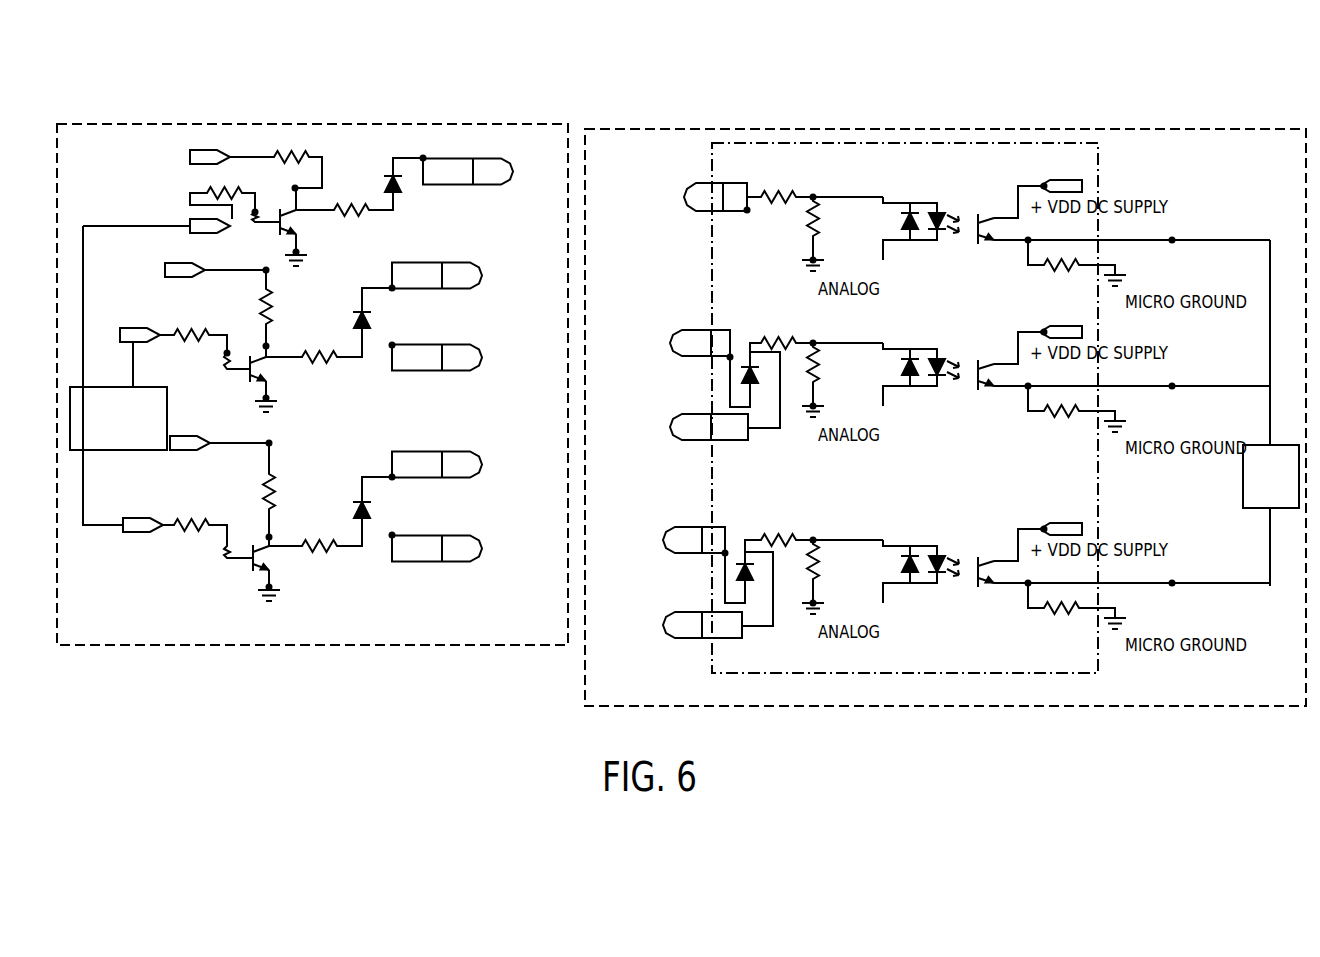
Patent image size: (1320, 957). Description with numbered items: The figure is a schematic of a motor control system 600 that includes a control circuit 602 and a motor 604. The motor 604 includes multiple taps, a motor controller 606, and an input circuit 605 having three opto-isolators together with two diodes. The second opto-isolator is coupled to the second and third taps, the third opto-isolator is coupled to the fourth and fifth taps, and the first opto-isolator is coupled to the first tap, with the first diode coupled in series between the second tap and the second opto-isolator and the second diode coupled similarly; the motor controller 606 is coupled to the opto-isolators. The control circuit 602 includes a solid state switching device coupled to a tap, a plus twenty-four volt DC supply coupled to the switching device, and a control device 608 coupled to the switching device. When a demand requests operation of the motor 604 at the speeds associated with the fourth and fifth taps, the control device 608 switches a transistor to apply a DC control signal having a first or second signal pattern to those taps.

The motor control system 600 is at (579, 74).
The control circuit 602 is at (372, 124).
The motor 604 is at (843, 129).
The input circuit 605 is at (928, 673).
The motor controller 606 is at (1282, 511).
The control device 608 is at (132, 433).